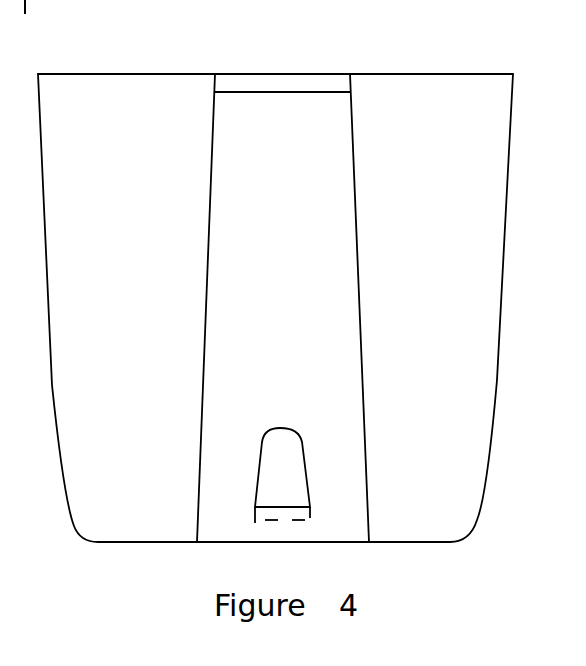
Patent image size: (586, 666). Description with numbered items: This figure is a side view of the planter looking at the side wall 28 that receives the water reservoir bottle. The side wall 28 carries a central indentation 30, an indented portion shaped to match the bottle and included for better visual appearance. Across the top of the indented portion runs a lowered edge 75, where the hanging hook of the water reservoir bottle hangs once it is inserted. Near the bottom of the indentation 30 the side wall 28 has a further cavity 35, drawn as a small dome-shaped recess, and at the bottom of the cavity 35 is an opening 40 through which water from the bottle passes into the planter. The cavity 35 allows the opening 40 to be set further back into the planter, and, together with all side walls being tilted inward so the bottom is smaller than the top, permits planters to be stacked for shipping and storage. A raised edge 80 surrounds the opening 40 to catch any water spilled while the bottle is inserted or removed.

The side wall 28 is at (253, 152).
The indentation 30 is at (296, 262).
The lowered edge 75 is at (311, 90).
The cavity 35 is at (290, 428).
The opening 40 is at (285, 524).
The raised edge 80 is at (312, 517).